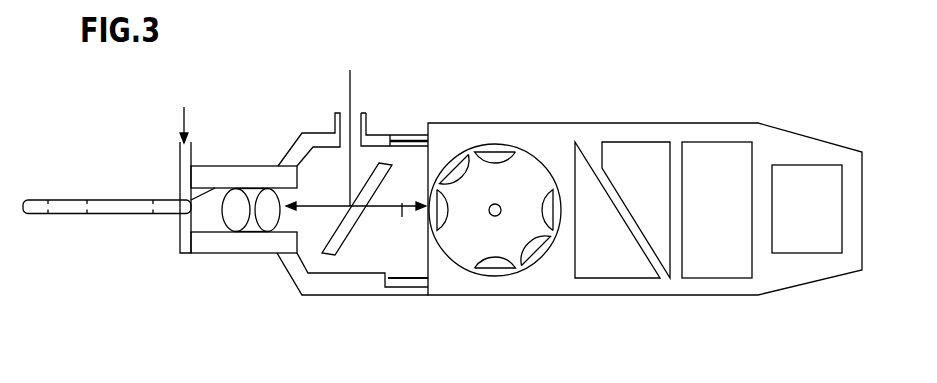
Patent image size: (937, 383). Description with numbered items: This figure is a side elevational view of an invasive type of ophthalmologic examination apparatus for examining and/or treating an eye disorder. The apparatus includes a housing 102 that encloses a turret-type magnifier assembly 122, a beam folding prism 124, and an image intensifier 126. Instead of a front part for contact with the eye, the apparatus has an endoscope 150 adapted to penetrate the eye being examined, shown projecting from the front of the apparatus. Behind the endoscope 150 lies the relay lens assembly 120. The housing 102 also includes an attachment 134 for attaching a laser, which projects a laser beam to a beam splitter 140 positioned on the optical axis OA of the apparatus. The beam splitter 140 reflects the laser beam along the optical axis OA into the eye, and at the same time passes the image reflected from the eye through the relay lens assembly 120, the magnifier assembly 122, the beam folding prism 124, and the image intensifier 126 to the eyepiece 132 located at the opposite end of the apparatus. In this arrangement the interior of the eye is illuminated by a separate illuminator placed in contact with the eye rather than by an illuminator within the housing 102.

The housing 102 is at (527, 118).
The relay lens assembly 120 is at (270, 218).
The turret-type magnifier assembly 122 is at (497, 147).
The beam folding prism 124 is at (635, 168).
The image intensifier 126 is at (705, 267).
The eyepiece 132 is at (803, 192).
The attachment 134 is at (337, 127).
The beam splitter 140 is at (352, 223).
The endoscope 150 is at (105, 213).
The optical axis OA is at (356, 226).